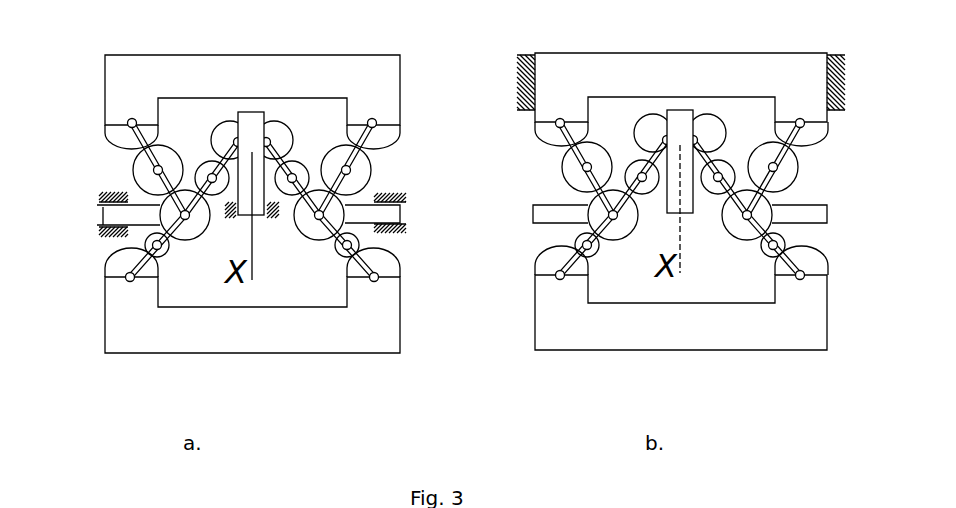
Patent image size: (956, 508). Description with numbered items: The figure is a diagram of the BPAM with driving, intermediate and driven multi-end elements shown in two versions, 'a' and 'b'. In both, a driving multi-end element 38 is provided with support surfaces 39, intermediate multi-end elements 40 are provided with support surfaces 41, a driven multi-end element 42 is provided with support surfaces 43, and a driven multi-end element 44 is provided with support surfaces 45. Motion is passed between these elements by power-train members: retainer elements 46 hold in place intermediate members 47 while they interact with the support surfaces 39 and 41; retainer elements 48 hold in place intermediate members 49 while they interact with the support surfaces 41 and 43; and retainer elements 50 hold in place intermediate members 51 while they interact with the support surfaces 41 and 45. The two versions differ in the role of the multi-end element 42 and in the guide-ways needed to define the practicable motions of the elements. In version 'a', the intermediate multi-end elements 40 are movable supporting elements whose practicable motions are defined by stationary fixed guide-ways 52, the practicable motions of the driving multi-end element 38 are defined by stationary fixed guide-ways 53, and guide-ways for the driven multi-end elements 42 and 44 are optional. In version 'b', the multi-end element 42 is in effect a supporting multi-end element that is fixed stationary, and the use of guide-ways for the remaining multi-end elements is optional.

The driving multi-end element 38 is at (254, 138).
The support surfaces 39 is at (228, 128).
The intermediate multi-end elements 40 is at (123, 220).
The support surfaces 41 is at (158, 207).
The driven multi-end element 42 is at (310, 78).
The support surfaces 43 is at (120, 133).
The driven multi-end element 44 is at (200, 323).
The support surfaces 45 is at (122, 268).
The retainer elements 46 is at (222, 162).
The intermediate members 47 is at (205, 170).
The retainer elements 48 is at (147, 142).
The intermediate members 49 is at (137, 170).
The retainer elements 50 is at (145, 247).
The intermediate members 51 is at (110, 255).
The stationary fixed guide-ways 52 is at (107, 238).
The stationary fixed guide-ways 53 is at (272, 233).